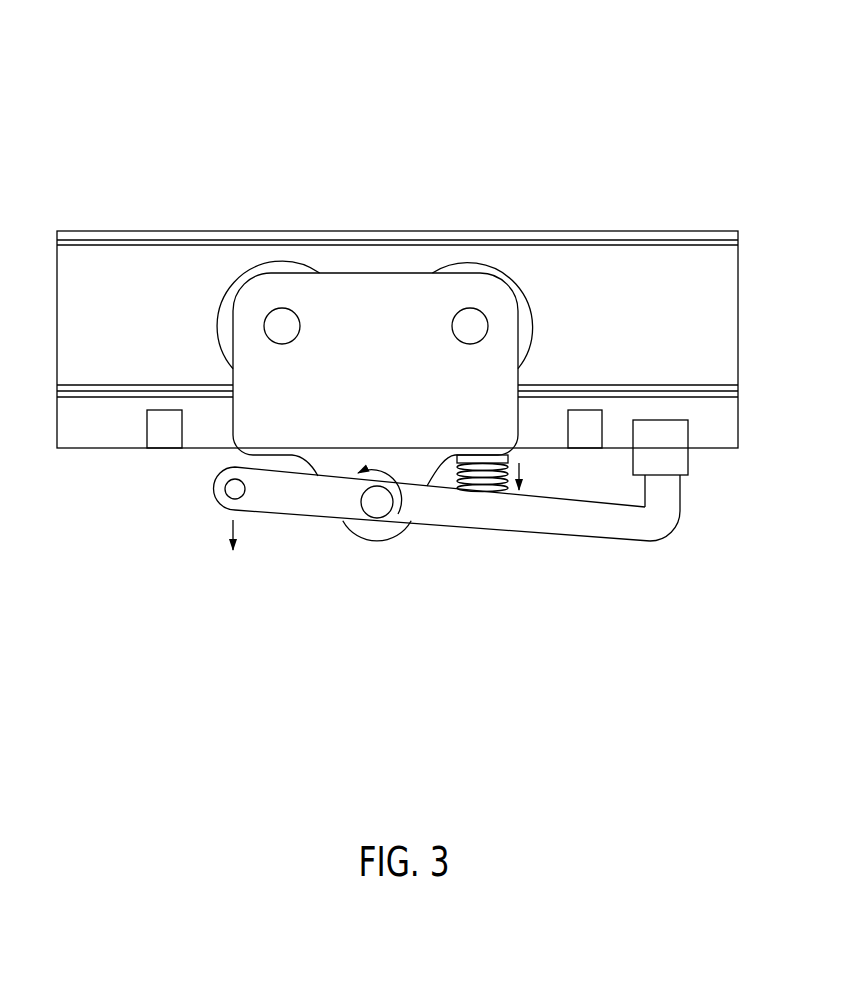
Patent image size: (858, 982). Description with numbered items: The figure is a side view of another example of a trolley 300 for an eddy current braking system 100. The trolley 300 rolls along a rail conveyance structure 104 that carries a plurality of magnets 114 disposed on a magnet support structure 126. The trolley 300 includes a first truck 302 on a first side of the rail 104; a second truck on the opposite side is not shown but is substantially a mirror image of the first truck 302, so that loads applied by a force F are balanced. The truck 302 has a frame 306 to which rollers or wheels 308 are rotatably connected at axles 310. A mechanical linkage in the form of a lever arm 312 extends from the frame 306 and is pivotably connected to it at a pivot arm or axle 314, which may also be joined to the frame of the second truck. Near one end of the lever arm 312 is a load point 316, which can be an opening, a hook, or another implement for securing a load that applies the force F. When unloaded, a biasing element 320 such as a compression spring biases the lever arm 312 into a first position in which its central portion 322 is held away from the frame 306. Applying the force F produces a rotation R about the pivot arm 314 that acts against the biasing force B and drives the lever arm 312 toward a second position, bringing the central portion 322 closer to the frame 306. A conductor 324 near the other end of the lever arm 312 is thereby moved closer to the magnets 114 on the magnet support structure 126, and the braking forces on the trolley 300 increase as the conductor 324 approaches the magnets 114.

The eddy current braking system 100 is at (677, 88).
The rail conveyance structure 104 is at (697, 268).
The magnet support structure 126 is at (715, 428).
The magnets 114 is at (160, 430).
The trolley 300 is at (278, 627).
The first truck 302 is at (580, 672).
The frame 306 is at (375, 312).
The rollers or wheels 308 is at (228, 312).
The axles 310 is at (284, 322).
The lever arm 312 is at (625, 530).
The pivot arm or axle 314 is at (377, 500).
The load point 316 is at (236, 490).
The biasing element 320 is at (503, 472).
The central portion 322 is at (487, 513).
The conductor 324 is at (668, 453).